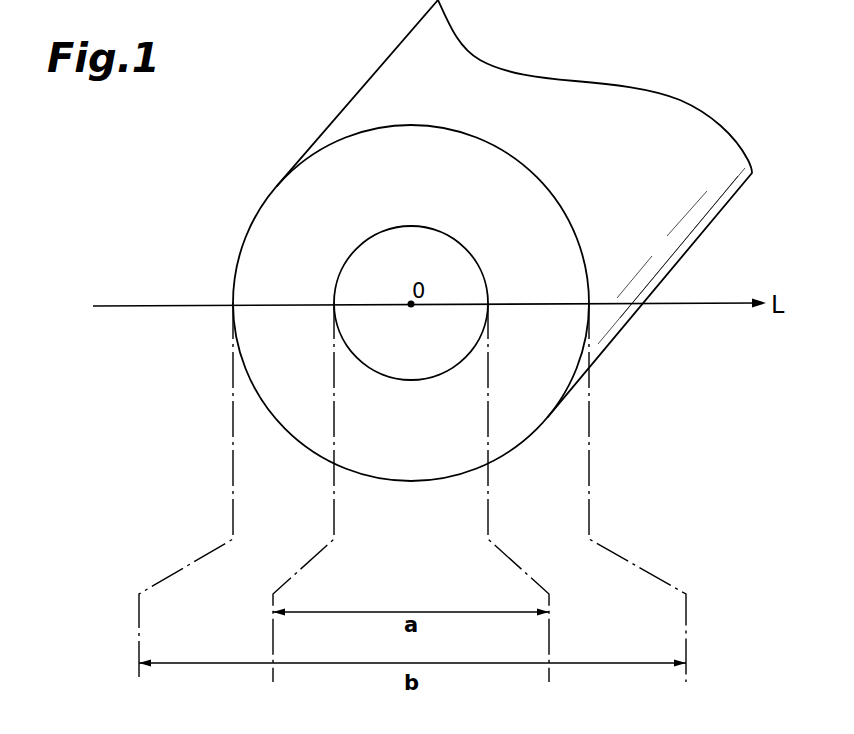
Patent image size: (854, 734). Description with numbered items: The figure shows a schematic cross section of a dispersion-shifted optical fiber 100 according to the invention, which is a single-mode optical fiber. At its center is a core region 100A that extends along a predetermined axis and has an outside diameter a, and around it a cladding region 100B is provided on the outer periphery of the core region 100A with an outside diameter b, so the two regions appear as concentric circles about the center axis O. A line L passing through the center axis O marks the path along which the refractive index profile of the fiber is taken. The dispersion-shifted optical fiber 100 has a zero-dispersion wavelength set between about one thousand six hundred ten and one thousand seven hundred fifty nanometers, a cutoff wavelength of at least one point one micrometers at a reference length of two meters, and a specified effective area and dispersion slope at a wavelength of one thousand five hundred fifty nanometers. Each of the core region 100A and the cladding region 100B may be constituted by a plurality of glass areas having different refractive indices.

The dispersion-shifted optical fiber 100 is at (692, 132).
The core region 100A is at (370, 268).
The cladding region 100B is at (553, 382).